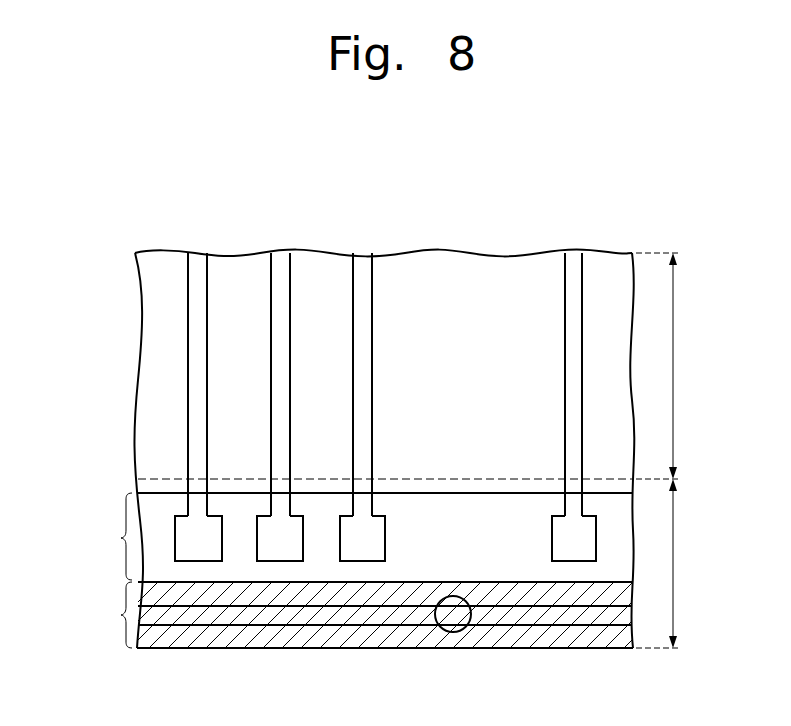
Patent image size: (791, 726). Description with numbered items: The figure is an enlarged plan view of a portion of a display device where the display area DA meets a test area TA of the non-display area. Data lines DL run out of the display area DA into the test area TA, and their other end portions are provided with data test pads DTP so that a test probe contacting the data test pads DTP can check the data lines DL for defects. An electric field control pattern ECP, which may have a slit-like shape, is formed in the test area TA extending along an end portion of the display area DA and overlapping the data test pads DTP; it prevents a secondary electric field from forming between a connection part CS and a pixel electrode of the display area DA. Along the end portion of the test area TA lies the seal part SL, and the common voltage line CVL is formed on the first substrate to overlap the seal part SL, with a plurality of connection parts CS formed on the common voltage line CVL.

The data lines DL is at (193, 397).
The data test pads DTP is at (183, 515).
The electric field control pattern ECP is at (354, 536).
The seal part SL is at (395, 620).
The common voltage line CVL is at (334, 618).
The connection part CS is at (453, 632).
The display area DA is at (669, 366).
The test area TA is at (669, 563).